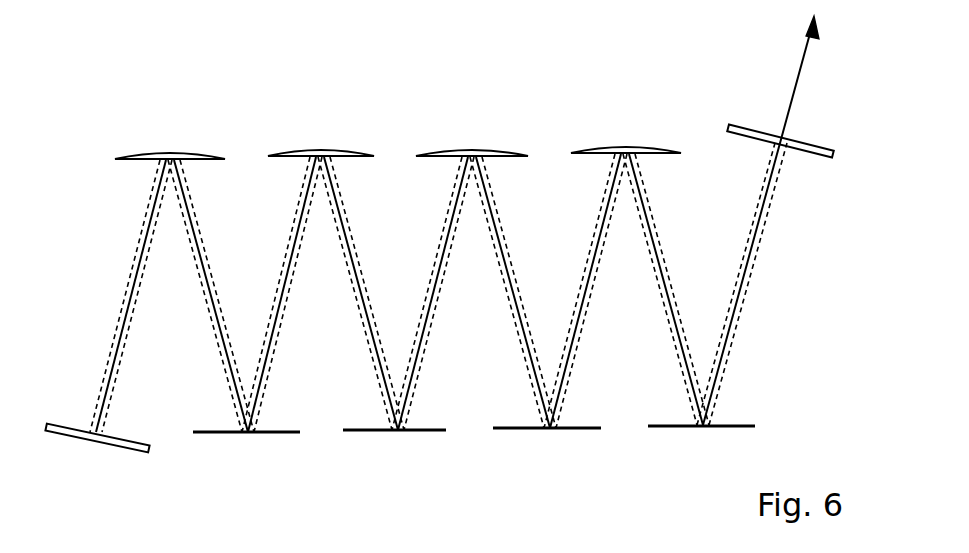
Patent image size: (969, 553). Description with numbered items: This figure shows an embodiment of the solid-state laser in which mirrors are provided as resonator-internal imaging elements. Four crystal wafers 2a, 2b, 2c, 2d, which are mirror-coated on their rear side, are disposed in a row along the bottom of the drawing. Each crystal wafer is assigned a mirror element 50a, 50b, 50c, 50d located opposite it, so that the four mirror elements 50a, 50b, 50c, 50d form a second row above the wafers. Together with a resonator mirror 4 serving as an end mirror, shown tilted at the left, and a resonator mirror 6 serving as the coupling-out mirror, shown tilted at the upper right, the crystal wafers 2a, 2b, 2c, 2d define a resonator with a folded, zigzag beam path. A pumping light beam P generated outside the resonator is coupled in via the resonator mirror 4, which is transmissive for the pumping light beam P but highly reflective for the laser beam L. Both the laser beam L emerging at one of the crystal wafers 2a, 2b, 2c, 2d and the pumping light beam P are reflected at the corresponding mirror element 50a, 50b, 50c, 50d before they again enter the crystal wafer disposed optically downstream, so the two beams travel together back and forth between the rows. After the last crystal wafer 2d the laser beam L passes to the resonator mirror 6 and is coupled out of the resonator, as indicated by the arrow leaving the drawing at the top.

The mirror element 50a is at (143, 155).
The mirror element 50b is at (294, 152).
The mirror element 50c is at (447, 152).
The mirror element 50d is at (598, 150).
The crystal wafer 2a is at (223, 434).
The crystal wafer 2b is at (363, 432).
The crystal wafer 2c is at (522, 430).
The crystal wafer 2d is at (677, 428).
The resonator mirror 4 is at (125, 447).
The resonator mirror 6 is at (817, 147).
The pumping light beam P is at (657, 224).
The laser beam L is at (802, 60).